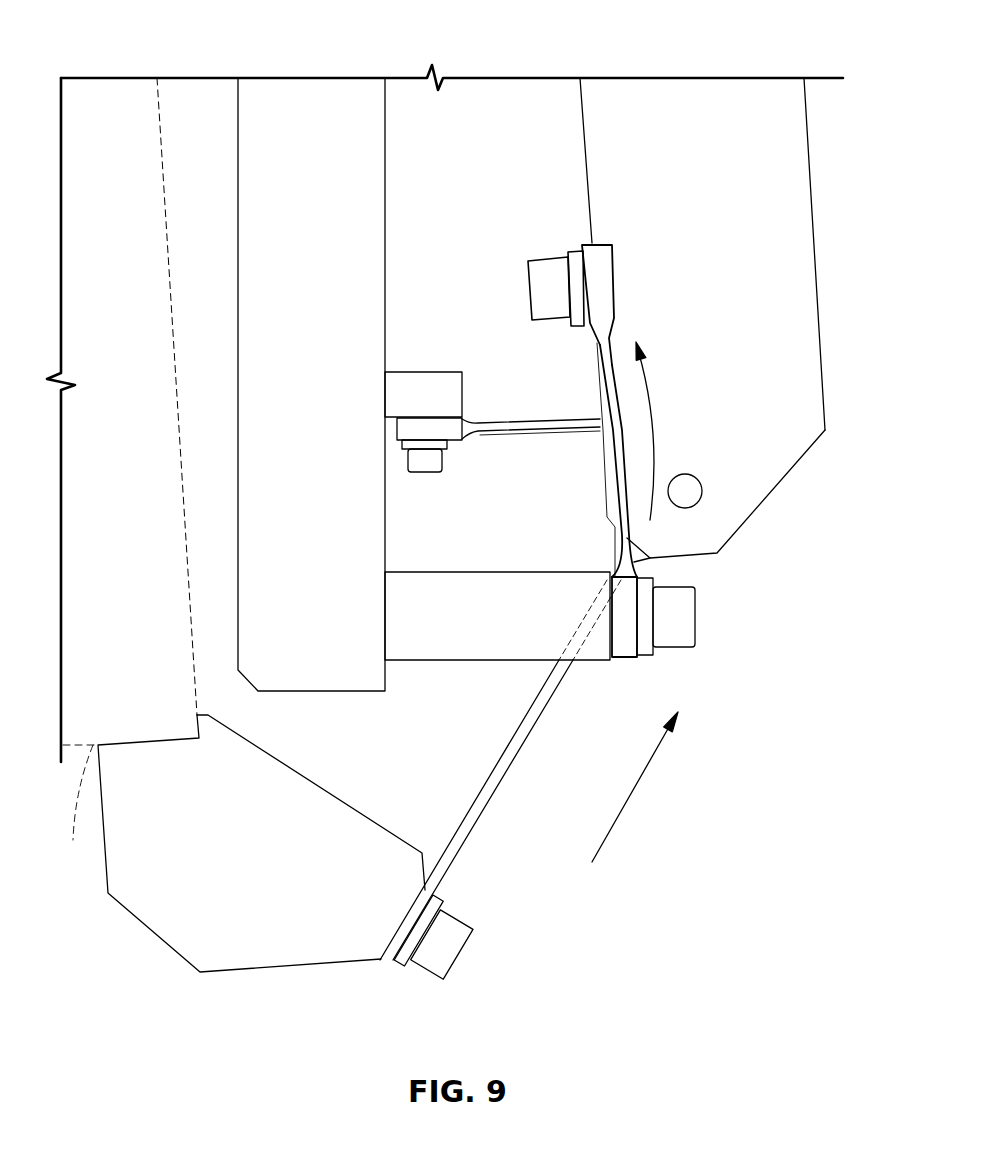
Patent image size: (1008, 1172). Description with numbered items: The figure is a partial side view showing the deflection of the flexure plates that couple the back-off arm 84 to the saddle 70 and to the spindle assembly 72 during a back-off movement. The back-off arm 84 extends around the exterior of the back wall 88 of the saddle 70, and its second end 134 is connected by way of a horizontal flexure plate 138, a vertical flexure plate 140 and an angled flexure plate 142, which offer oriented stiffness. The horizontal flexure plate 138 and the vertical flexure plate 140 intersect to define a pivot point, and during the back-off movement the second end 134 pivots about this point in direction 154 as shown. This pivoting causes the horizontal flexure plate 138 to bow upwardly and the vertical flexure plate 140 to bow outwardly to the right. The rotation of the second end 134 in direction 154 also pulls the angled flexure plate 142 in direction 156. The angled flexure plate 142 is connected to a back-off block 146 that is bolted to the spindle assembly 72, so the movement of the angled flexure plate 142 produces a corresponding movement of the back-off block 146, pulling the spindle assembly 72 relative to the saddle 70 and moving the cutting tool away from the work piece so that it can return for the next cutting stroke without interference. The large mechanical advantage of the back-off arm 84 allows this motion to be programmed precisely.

The saddle 70 is at (237, 98).
The spindle assembly 72 is at (76, 808).
The back-off arm 84 is at (800, 172).
The back wall 88 is at (290, 97).
The second end 134 is at (817, 302).
The horizontal flexure plate 138 is at (488, 427).
The vertical flexure plate 140 is at (618, 458).
The angled flexure plate 142 is at (487, 797).
The back-off block 146 is at (235, 972).
The direction 154 is at (647, 397).
The direction 156 is at (607, 835).